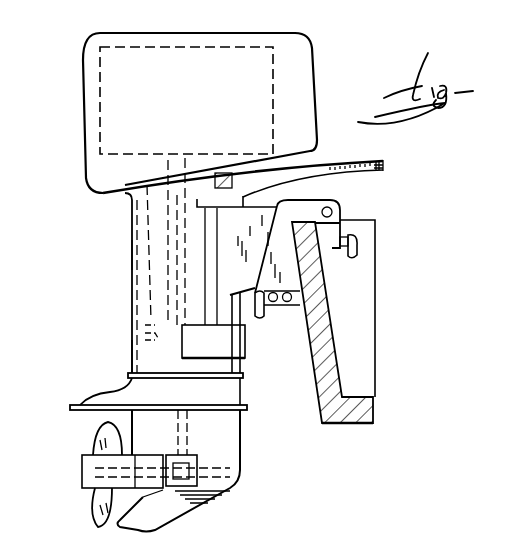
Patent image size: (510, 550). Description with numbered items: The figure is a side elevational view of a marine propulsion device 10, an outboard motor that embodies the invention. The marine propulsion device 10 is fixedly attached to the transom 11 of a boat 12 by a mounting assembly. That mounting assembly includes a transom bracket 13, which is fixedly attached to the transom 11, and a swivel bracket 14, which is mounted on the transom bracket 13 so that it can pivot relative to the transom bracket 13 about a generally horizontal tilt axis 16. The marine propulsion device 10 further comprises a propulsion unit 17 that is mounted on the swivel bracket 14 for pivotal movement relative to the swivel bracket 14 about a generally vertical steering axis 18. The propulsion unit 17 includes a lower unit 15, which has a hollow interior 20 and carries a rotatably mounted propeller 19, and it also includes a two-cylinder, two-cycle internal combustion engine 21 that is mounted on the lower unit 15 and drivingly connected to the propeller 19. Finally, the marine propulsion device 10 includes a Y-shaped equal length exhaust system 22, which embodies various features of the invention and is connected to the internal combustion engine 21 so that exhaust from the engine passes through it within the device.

The marine propulsion device 10 is at (283, 22).
The transom 11 is at (318, 292).
The boat 12 is at (367, 232).
The transom bracket 13 is at (298, 306).
The swivel bracket 14 is at (232, 228).
The lower unit 15 is at (132, 351).
The tilt axis 16 is at (330, 207).
The propulsion unit 17 is at (132, 255).
The steering axis 18 is at (240, 340).
The propeller 19 is at (100, 432).
The hollow interior 20 is at (150, 332).
The internal combustion engine 21 is at (127, 82).
The exhaust system 22 is at (150, 272).